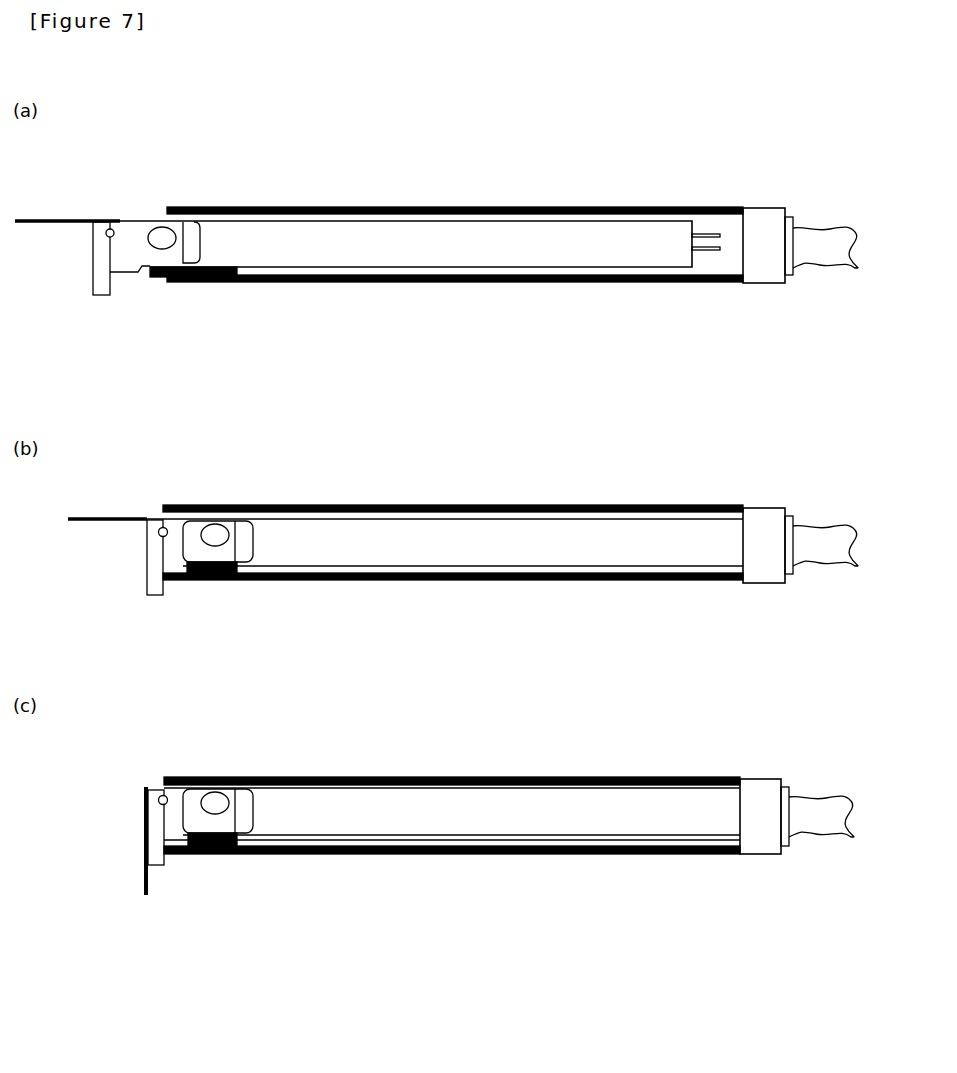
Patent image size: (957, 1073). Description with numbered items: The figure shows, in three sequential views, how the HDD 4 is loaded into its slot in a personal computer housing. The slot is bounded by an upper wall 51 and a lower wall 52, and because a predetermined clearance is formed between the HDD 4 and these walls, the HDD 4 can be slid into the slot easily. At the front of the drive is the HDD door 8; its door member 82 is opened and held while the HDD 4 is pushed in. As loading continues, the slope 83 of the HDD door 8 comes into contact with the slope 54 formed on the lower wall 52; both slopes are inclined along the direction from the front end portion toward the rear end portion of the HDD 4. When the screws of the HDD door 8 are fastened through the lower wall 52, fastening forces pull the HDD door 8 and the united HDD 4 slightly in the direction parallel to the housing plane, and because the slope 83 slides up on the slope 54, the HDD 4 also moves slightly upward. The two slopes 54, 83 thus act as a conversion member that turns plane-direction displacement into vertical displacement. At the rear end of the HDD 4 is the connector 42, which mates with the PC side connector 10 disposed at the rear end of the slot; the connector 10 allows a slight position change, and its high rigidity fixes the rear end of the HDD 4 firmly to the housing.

The HDD 4 is at (470, 237).
The HDD door 8 is at (75, 243).
The PC side connector 10 is at (762, 283).
The connector 42 is at (693, 230).
The upper wall 51 is at (353, 207).
The lower wall 52 is at (303, 285).
The slope 54 is at (200, 580).
The door member 82 is at (67, 220).
The slope 83 is at (202, 520).